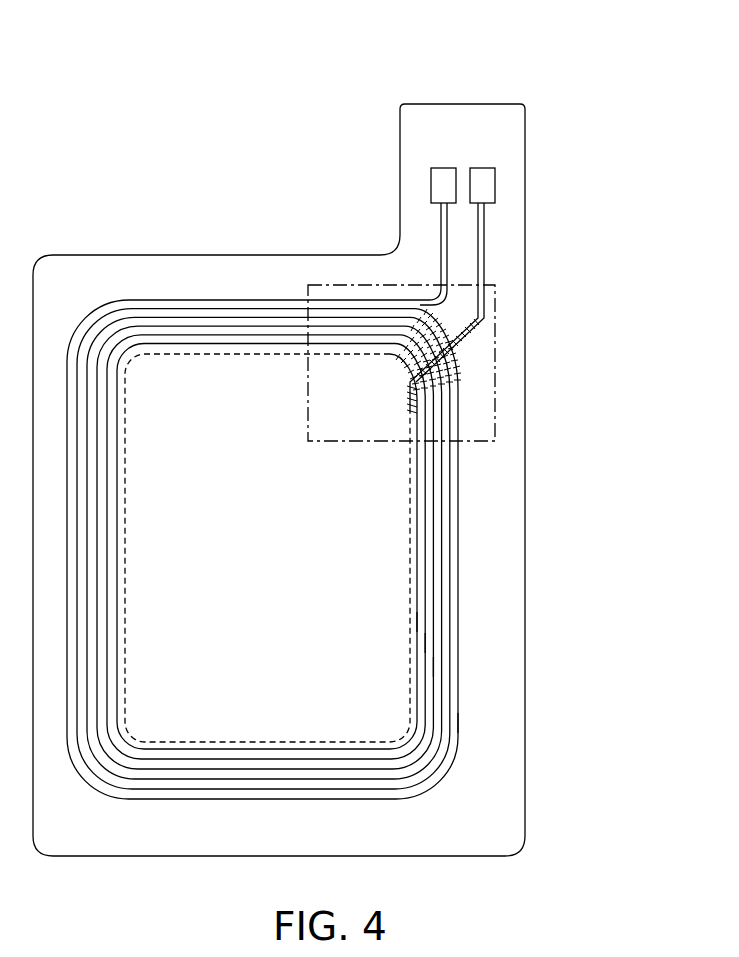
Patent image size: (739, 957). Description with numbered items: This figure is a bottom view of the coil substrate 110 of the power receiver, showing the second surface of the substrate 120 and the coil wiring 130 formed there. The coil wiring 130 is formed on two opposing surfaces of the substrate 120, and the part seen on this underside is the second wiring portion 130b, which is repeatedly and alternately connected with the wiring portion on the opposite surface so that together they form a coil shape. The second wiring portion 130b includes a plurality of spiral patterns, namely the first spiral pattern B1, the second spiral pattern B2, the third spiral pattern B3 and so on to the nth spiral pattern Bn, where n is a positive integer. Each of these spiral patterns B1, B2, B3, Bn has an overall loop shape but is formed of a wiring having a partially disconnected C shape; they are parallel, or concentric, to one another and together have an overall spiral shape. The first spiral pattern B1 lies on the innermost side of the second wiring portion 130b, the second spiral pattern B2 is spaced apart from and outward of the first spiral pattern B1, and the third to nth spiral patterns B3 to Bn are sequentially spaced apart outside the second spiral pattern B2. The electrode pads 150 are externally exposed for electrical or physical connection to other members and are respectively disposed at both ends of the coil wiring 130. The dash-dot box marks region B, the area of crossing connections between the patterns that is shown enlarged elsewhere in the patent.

The coil substrate 110 is at (235, 53).
The substrate 120 is at (510, 547).
The coil wiring 130 is at (470, 488).
The second wiring portion 130b is at (590, 623).
The electrode pads 150 is at (444, 168).
The region B is at (495, 366).
The first spiral pattern B1 is at (417, 622).
The second spiral pattern B2 is at (427, 643).
The third spiral pattern B3 is at (437, 667).
The nth spiral pattern Bn is at (458, 723).